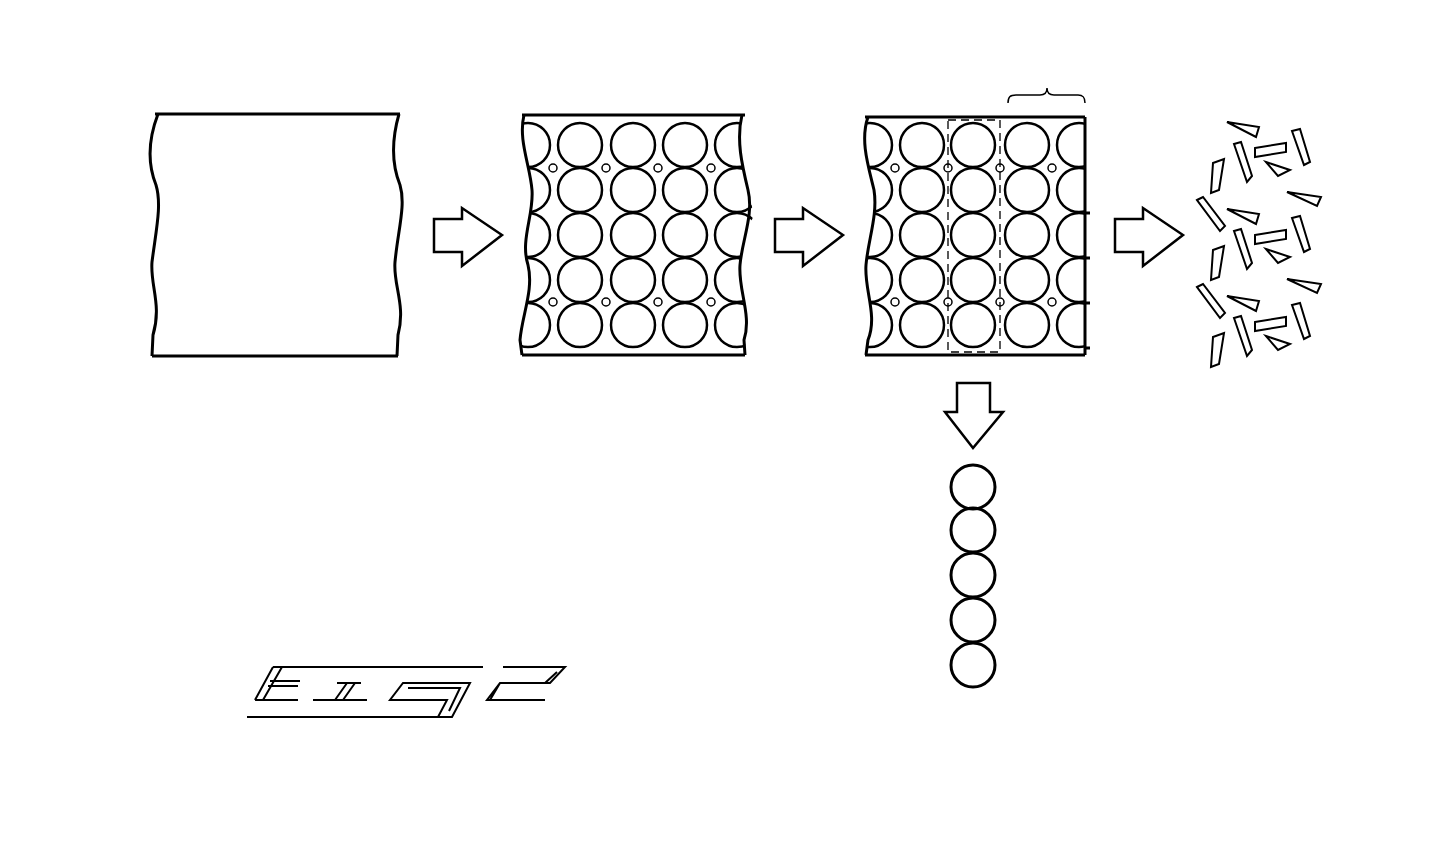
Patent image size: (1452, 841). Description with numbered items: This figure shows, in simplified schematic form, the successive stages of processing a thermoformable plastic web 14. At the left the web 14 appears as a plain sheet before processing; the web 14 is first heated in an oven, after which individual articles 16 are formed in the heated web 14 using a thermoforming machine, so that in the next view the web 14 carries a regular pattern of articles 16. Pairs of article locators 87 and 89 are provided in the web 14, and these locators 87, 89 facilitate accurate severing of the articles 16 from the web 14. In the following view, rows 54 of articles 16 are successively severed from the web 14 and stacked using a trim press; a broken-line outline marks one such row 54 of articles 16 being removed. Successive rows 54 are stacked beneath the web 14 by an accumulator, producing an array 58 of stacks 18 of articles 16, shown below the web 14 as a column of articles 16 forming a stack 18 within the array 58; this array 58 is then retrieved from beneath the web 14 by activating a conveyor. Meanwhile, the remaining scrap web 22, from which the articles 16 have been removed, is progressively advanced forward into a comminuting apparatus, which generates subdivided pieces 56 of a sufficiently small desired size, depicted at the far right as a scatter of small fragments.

The thermoformable plastic web 14 is at (277, 358).
The articles 16 is at (677, 330).
The stacks 18 is at (1015, 680).
The scrap web 22 is at (1046, 78).
The rows 54 is at (967, 108).
The subdivided pieces 56 is at (1335, 170).
The array 58 is at (918, 618).
The article locator 87 is at (662, 302).
The article locator 89 is at (659, 164).